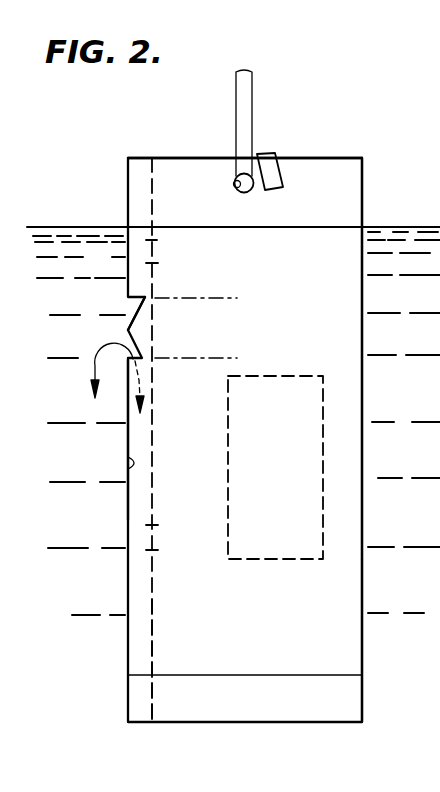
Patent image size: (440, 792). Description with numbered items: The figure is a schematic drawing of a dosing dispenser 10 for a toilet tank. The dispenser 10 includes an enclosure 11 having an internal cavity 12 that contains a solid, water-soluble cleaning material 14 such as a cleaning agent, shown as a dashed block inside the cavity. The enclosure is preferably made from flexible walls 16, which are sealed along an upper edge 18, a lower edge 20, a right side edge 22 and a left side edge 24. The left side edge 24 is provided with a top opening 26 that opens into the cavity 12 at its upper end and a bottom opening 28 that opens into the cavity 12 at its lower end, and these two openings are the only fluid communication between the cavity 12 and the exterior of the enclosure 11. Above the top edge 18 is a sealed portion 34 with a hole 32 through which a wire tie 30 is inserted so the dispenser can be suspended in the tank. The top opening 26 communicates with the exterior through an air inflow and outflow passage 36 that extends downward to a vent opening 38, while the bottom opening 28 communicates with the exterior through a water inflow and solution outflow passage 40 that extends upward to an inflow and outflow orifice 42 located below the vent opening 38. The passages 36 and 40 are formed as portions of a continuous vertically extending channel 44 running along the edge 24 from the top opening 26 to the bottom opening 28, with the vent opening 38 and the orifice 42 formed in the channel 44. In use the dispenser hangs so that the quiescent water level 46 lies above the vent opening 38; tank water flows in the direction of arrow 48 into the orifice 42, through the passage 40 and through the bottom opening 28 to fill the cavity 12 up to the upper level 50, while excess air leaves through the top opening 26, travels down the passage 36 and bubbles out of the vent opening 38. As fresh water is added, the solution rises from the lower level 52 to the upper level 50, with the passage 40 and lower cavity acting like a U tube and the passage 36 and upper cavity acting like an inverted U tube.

The dispenser 10 is at (127, 140).
The enclosure 11 is at (362, 325).
The internal cavity 12 is at (170, 575).
The cleaning material 14 is at (335, 512).
The flexible walls 16 is at (340, 605).
The upper edge 18 is at (342, 226).
The lower edge 20 is at (337, 675).
The right side edge 22 is at (363, 450).
The left side edge 24 is at (152, 625).
The top opening 26 is at (147, 240).
The bottom opening 28 is at (150, 525).
The wire tie 30 is at (251, 121).
The hole 32 is at (235, 179).
The sealed portion 34 is at (324, 162).
The air inflow and outflow passage 36 is at (131, 270).
The vent opening 38 is at (130, 312).
The water inflow and solution outflow passage 40 is at (130, 463).
The inflow and outflow orifice 42 is at (137, 357).
The channel 44 is at (128, 437).
The quiescent water level 46 is at (67, 227).
The arrow 48 is at (139, 380).
The upper level 50 is at (207, 292).
The lower level 52 is at (213, 356).